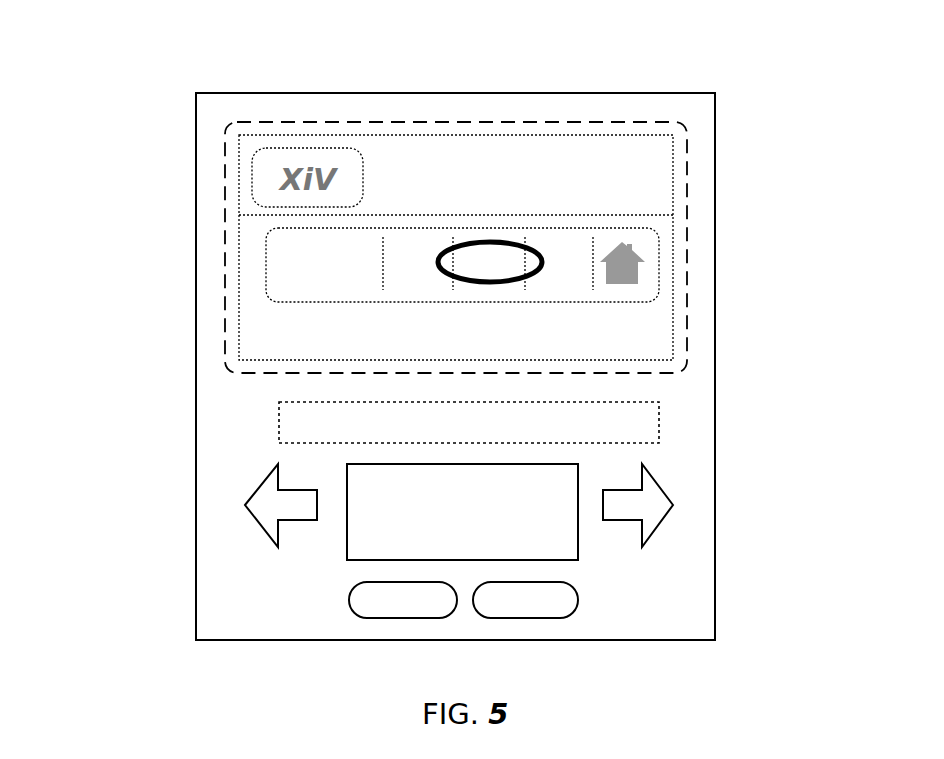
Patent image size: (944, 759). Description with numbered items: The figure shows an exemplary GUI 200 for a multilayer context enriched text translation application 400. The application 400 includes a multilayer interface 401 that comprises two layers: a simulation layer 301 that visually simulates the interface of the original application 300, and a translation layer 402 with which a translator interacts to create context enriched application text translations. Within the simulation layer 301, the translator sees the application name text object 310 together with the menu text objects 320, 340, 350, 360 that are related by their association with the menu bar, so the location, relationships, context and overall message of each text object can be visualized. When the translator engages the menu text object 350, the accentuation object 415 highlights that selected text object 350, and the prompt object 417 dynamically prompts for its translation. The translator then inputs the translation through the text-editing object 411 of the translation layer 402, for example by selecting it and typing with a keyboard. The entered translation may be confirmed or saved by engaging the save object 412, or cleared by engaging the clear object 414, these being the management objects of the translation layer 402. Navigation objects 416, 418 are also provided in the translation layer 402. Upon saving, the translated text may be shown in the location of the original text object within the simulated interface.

The GUI 200 is at (158, 178).
The application 300 is at (673, 180).
The simulation layer 301 is at (687, 245).
The application name text object 310 is at (519, 158).
The menu text object 320 is at (325, 281).
The menu text object 340 is at (428, 281).
The menu text object 350 is at (503, 285).
The menu text object 360 is at (561, 281).
The multilayer context enriched text translation application 400 is at (863, 177).
The interface 401 is at (715, 305).
The translation layer 402 is at (217, 388).
The text-editing object 411 is at (578, 545).
The save object 412 is at (530, 618).
The clear object 414 is at (400, 618).
The accentuation object 415 is at (465, 241).
The navigation object 416 is at (245, 505).
The prompt object 417 is at (659, 420).
The navigation object 418 is at (673, 505).